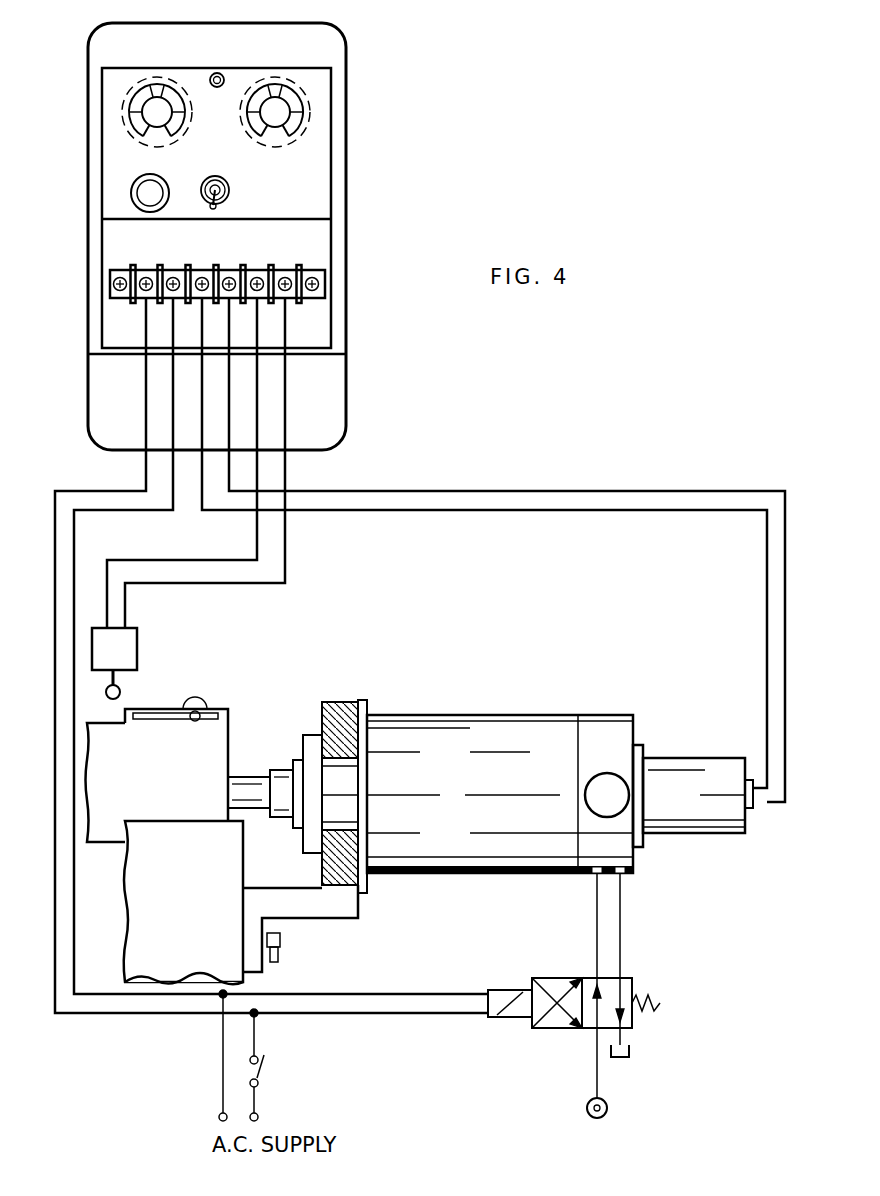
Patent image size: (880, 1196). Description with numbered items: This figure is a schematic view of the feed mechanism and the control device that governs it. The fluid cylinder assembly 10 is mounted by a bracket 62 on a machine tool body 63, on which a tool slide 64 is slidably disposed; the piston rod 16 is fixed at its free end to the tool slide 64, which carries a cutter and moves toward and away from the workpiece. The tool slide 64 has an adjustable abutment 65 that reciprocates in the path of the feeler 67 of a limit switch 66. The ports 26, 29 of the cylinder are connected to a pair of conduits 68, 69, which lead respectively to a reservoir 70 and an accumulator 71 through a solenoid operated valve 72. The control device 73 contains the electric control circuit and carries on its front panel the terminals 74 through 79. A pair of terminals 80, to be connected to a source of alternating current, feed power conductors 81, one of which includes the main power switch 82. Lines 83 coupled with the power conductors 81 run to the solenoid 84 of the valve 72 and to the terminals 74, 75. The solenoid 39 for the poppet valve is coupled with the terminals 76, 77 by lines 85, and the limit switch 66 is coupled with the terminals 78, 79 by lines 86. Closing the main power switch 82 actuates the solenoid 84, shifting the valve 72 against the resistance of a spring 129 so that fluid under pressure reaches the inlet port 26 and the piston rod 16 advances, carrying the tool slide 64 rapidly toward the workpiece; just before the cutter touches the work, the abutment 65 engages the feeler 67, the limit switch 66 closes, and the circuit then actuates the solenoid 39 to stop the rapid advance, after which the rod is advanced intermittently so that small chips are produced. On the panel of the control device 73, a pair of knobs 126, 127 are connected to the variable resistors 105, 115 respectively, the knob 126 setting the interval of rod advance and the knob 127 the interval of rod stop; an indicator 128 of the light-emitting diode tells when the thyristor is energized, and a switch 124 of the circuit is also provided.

The fluid cylinder assembly 10 is at (494, 722).
The piston rod 16 is at (287, 773).
The inlet port 26 is at (625, 876).
The port 29 is at (594, 877).
The solenoid 39 is at (687, 775).
The bracket 62 is at (345, 700).
The machine tool body 63 is at (132, 920).
The tool slide 64 is at (215, 743).
The adjustable abutment 65 is at (204, 700).
The limit switch 66 is at (128, 640).
The feeler 67 is at (121, 691).
The conduit 68 is at (622, 923).
The conduit 69 is at (596, 923).
The reservoir 70 is at (631, 1051).
The accumulator 71 is at (586, 1110).
The solenoid operated valve 72 is at (633, 989).
The control device 73 is at (348, 181).
The terminal 74 is at (146, 276).
The terminal 75 is at (173, 276).
The terminal 76 is at (202, 276).
The terminal 77 is at (229, 276).
The terminal 78 is at (257, 276).
The terminal 79 is at (285, 276).
The terminals 80 is at (218, 1117).
The power conductors 81 is at (253, 1031).
The main power switch 82 is at (264, 1069).
The lines 83 is at (56, 526).
The solenoid 84 is at (501, 989).
The lines 85 is at (547, 508).
The lines 86 is at (258, 527).
The variable resistor 105 is at (300, 86).
The variable resistor 115 is at (132, 80).
The switch 124 is at (223, 190).
The knob 126 is at (290, 106).
The knob 127 is at (150, 110).
The indicator 128 is at (217, 88).
The spring 129 is at (660, 1003).